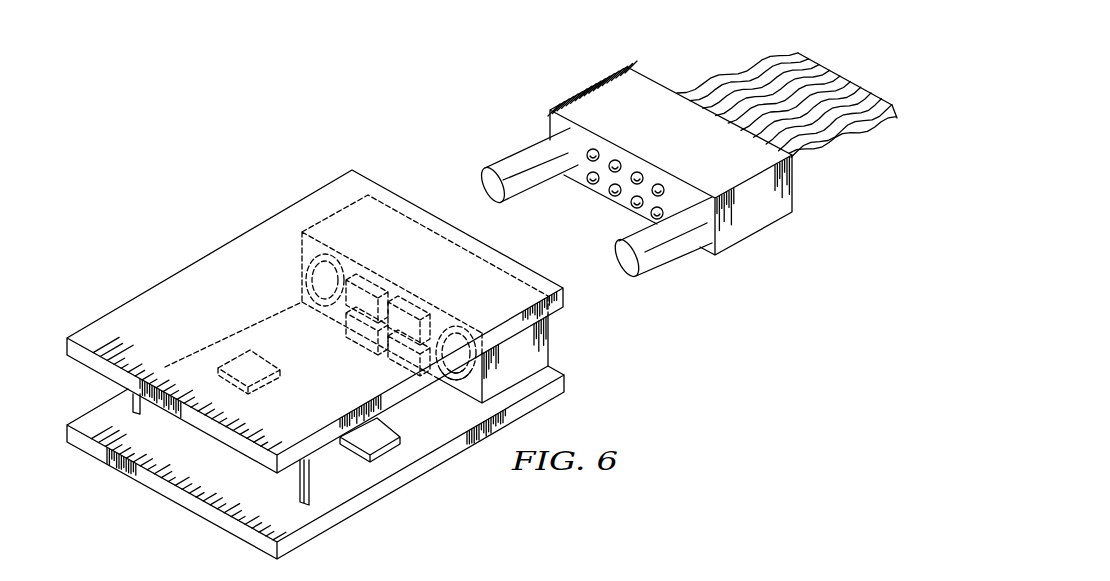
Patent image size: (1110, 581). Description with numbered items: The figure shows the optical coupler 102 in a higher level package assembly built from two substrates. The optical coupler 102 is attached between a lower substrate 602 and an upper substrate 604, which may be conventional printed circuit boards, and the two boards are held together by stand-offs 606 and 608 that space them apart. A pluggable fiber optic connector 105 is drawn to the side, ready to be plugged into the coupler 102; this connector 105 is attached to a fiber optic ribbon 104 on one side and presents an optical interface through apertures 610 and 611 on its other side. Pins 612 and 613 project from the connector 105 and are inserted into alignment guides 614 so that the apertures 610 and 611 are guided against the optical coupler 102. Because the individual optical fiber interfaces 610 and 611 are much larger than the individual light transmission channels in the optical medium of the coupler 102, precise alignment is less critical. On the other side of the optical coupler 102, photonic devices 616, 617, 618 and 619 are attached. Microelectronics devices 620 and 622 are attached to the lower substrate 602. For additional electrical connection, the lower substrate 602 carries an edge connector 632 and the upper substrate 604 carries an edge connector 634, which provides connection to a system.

The optical coupler 102 is at (535, 360).
The fiber optic ribbon 104 is at (762, 64).
The pluggable fiber optic connector 105 is at (622, 83).
The lower substrate 602 is at (158, 482).
The upper substrate 604 is at (213, 261).
The stand-off 606 is at (306, 478).
The stand-off 608 is at (128, 402).
The aperture 610 is at (598, 183).
The aperture 611 is at (622, 160).
The pin 612 is at (526, 151).
The pin 613 is at (615, 262).
The alignment guide 614 is at (307, 279).
The photonic device 616 is at (352, 333).
The photonic device 617 is at (362, 271).
The photonic device 618 is at (398, 357).
The photonic device 619 is at (402, 292).
The microelectronics device 620 is at (388, 452).
The microelectronics device 622 is at (240, 357).
The edge connector 632 is at (97, 432).
The edge connector 634 is at (112, 342).